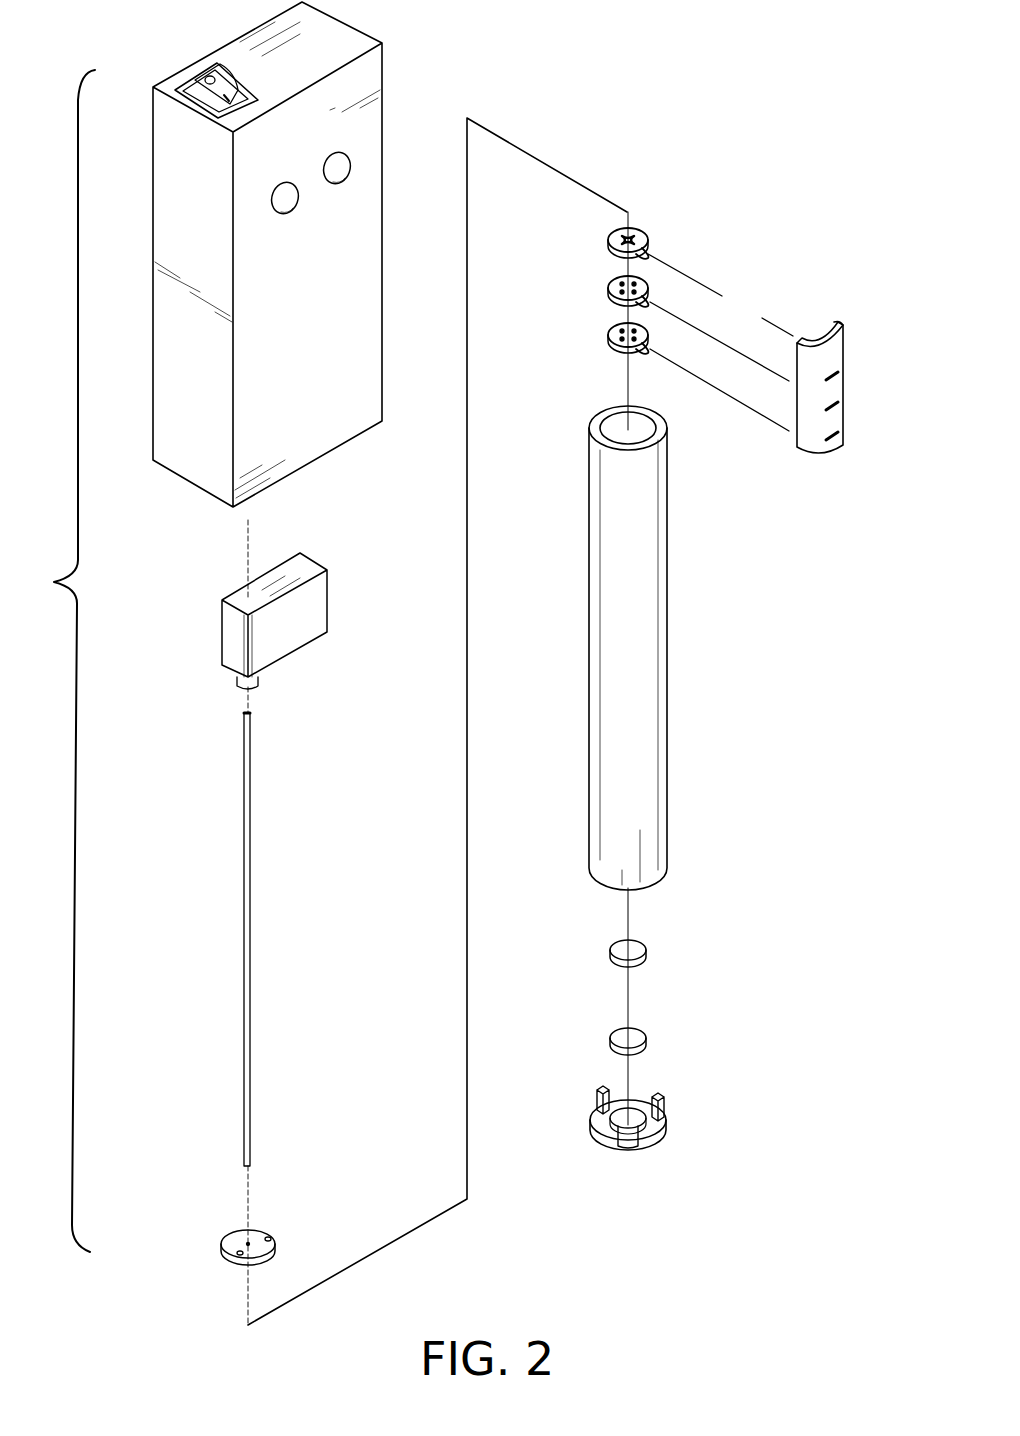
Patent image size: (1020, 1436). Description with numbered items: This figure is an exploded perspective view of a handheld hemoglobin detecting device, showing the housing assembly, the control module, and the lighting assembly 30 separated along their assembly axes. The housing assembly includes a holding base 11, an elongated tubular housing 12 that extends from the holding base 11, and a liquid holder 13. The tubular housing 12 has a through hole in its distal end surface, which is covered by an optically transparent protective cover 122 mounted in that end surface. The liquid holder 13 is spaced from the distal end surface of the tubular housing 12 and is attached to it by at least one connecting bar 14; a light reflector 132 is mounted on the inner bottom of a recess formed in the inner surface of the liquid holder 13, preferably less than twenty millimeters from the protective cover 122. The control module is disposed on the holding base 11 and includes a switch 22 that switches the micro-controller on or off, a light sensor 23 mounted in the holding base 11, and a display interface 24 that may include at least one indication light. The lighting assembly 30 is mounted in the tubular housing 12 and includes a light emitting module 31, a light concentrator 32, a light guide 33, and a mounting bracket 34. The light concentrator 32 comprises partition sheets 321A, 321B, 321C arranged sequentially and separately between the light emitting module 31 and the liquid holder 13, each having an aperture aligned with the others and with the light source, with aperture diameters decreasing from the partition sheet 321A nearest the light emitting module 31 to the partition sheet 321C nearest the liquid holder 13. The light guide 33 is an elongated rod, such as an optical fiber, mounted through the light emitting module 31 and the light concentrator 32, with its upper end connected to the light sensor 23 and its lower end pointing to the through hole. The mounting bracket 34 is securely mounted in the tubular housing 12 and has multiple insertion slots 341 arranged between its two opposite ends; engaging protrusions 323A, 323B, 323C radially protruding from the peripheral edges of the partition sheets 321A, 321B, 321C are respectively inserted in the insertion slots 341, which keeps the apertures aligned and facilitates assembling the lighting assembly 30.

The holding base 11 is at (165, 220).
The tubular housing 12 is at (660, 535).
The liquid holder 13 is at (660, 1125).
The connecting bar 14 is at (664, 1102).
The switch 22 is at (200, 80).
The light sensor 23 is at (316, 605).
The display interface 24 is at (344, 160).
The lighting assembly 30 is at (728, 437).
The light emitting module 31 is at (225, 1230).
The light concentrator 32 is at (648, 210).
The light guide 33 is at (250, 862).
The mounting bracket 34 is at (838, 392).
The protective cover 122 is at (640, 947).
The light reflector 132 is at (640, 1035).
The partition sheet 321A is at (614, 237).
The partition sheet 321B is at (614, 285).
The partition sheet 321C is at (614, 332).
The engaging protrusion 323A is at (650, 249).
The engaging protrusion 323B is at (652, 295).
The engaging protrusion 323C is at (652, 343).
The insertion slots 341 is at (834, 372).